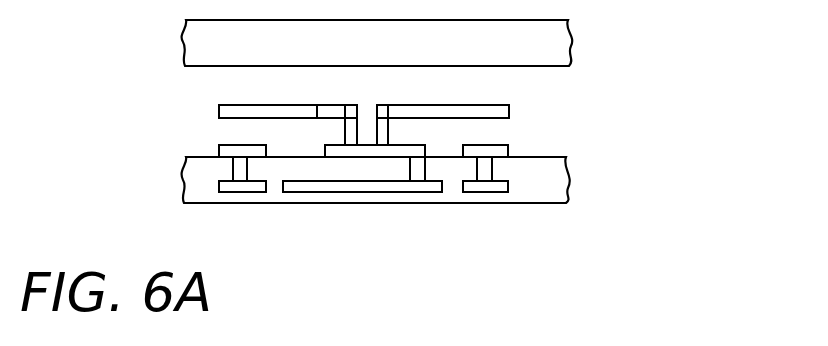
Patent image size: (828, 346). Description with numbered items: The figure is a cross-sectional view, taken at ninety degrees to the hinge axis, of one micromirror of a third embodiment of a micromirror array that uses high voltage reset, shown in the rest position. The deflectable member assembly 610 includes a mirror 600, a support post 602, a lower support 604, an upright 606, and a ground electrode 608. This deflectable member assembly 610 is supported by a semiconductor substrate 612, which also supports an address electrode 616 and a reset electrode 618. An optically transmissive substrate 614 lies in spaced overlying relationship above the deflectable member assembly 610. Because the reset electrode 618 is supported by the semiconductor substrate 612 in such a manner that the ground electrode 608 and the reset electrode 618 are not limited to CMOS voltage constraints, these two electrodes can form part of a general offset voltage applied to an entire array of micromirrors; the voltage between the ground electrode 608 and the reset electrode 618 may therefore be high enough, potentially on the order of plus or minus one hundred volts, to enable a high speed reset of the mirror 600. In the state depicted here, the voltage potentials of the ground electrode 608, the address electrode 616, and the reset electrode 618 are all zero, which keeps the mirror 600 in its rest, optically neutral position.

The mirror 600 is at (508, 103).
The support post 602 is at (385, 132).
The lower support 604 is at (422, 146).
The upright 606 is at (427, 162).
The ground electrode 608 is at (297, 193).
The deflectable member assembly 610 is at (203, 104).
The semiconductor substrate 612 is at (189, 176).
The optically transmissive substrate 614 is at (287, 53).
The address electrode 616 is at (241, 194).
The reset electrode 618 is at (500, 203).